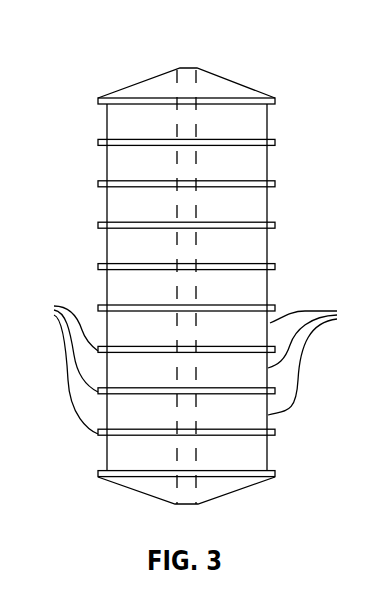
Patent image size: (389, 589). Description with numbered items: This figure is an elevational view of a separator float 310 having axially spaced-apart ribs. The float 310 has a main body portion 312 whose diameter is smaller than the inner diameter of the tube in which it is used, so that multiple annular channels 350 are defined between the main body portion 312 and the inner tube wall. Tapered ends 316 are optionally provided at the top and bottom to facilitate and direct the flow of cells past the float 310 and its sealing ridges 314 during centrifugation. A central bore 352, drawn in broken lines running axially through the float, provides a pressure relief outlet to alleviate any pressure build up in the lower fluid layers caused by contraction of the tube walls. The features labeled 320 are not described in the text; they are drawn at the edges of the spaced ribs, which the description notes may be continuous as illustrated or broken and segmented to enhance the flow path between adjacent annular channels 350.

The float 310 is at (296, 197).
The main body portion 312 is at (245, 294).
The sealing ridges 314 is at (98, 101).
The tapered ends 316 is at (220, 90).
The inlet ports 320 is at (59, 368).
The annular channels 350 is at (319, 361).
The central bore 352 is at (181, 69).